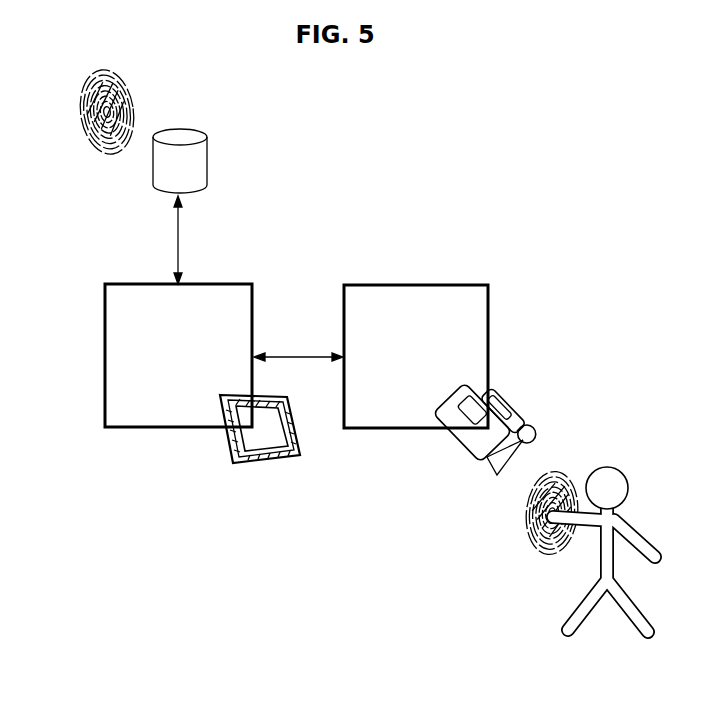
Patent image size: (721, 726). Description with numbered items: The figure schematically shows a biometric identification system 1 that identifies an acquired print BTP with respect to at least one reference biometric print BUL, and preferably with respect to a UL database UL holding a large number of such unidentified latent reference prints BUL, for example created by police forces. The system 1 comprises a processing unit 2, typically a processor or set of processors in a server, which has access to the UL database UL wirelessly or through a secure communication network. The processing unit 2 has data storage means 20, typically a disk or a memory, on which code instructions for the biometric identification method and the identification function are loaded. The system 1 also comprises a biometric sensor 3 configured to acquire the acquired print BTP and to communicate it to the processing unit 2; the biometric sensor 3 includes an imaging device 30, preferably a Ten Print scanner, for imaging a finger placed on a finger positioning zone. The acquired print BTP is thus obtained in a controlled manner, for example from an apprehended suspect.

The biometric identification system 1 is at (447, 161).
The processing unit 2 is at (178, 355).
The biometric sensor 3 is at (416, 356).
The data storage means 20 is at (268, 426).
The imaging device 30 is at (456, 432).
The UL database UL is at (167, 178).
The reference biometric print BUL is at (84, 116).
The acquired print BTP is at (527, 520).